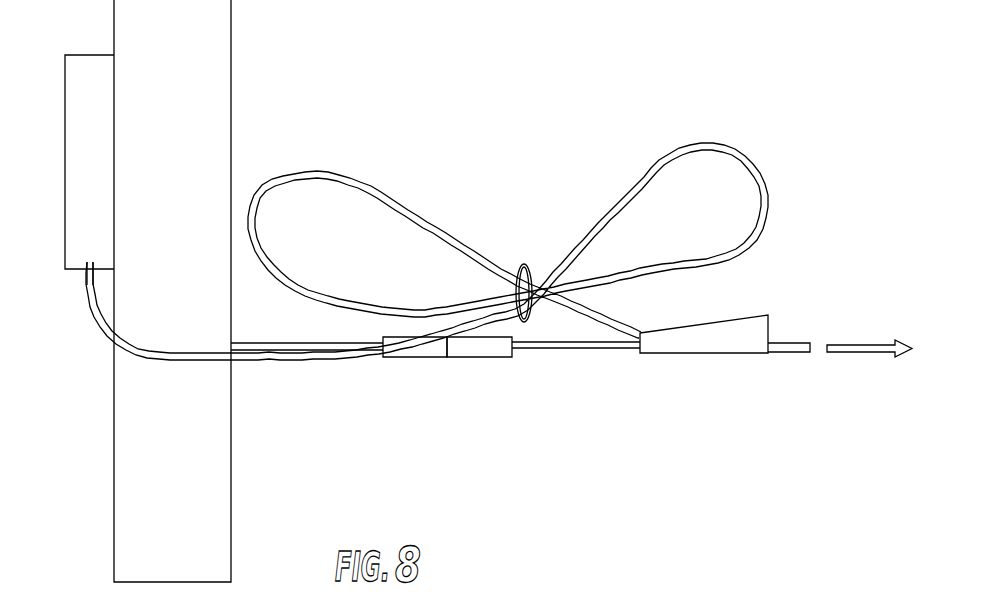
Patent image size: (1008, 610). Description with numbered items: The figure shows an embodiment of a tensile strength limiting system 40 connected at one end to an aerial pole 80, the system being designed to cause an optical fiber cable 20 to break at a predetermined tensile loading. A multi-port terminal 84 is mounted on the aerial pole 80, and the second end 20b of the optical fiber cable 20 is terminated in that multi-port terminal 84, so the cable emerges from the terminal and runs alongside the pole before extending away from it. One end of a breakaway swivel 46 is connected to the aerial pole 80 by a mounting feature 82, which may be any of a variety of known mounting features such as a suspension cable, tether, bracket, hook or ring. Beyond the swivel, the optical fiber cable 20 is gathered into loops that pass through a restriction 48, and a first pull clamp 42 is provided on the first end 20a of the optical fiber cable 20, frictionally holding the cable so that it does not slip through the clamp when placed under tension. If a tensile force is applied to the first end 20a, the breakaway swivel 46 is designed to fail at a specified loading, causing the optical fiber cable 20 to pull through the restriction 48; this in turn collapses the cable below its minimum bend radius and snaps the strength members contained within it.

The optical fiber cable 20 is at (750, 178).
The first end of the optical fiber cable 20a is at (792, 343).
The second end of the optical fiber cable 20b is at (90, 280).
The tensile strength limiting system 40 is at (379, 131).
The first pull clamp 42 is at (743, 323).
The breakaway swivel 46 is at (477, 350).
The restriction 48 is at (524, 264).
The aerial pole 80 is at (130, 452).
The mounting feature 82 is at (312, 347).
The multi-port terminal 84 is at (65, 125).